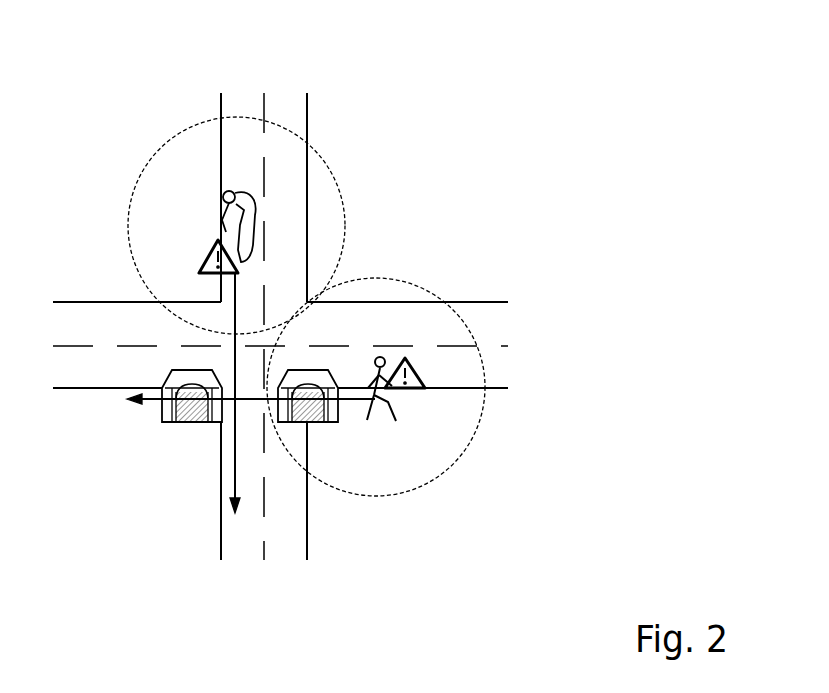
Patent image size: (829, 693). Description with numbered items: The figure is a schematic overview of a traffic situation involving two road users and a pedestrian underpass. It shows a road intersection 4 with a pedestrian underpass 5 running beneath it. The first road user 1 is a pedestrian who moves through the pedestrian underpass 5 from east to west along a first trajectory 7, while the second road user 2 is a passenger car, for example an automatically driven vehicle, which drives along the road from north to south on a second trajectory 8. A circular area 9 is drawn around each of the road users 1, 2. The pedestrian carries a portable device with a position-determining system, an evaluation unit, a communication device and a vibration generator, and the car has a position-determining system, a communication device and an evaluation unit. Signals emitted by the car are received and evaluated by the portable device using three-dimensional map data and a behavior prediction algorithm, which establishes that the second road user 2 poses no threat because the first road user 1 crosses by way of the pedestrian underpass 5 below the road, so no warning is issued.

The first road user 1 is at (393, 420).
The second road user 2 is at (235, 222).
The road intersection 4 is at (315, 325).
The pedestrian underpass 5 is at (168, 422).
The first trajectory 7 is at (250, 405).
The second trajectory 8 is at (233, 292).
The circular area 9 is at (328, 167).